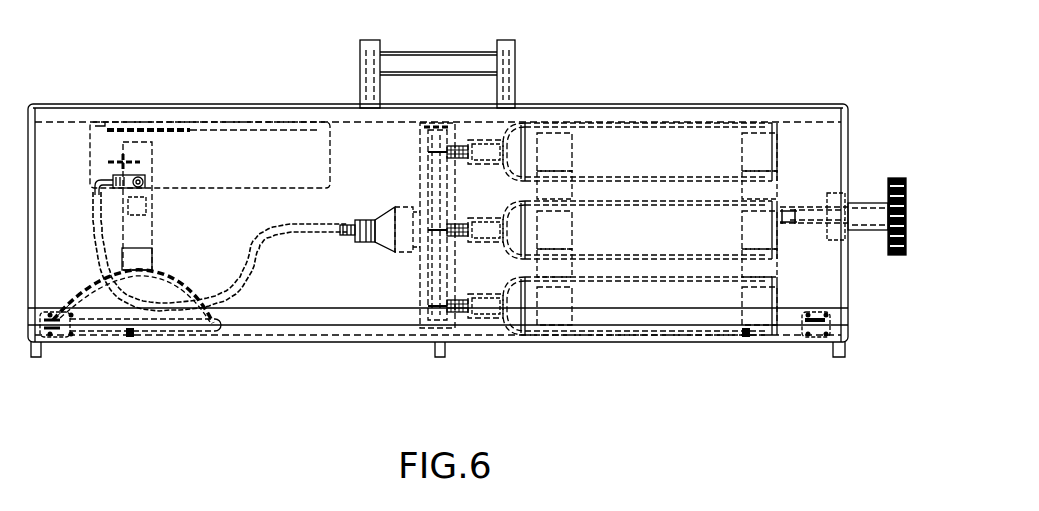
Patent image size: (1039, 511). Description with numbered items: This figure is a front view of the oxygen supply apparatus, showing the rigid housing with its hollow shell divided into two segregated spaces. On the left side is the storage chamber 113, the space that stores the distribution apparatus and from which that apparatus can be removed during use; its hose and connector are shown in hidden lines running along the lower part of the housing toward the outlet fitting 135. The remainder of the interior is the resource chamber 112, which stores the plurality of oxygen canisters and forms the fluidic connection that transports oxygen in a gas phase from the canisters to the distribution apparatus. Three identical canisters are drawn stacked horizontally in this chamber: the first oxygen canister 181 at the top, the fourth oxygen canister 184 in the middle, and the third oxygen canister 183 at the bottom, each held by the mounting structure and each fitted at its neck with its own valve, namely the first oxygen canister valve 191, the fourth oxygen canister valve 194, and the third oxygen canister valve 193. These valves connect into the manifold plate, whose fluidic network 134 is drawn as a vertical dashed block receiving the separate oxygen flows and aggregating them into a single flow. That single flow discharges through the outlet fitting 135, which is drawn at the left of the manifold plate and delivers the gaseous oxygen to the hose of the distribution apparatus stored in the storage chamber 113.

The resource chamber 112 is at (815, 162).
The storage chamber 113 is at (60, 147).
The fluidic network 134 is at (438, 237).
The outlet fitting 135 is at (395, 220).
The first oxygen canister 181 is at (605, 147).
The third oxygen canister 183 is at (655, 295).
The fourth oxygen canister 184 is at (658, 225).
The first oxygen canister valve 191 is at (488, 148).
The third oxygen canister valve 193 is at (487, 312).
The fourth oxygen canister valve 194 is at (493, 228).